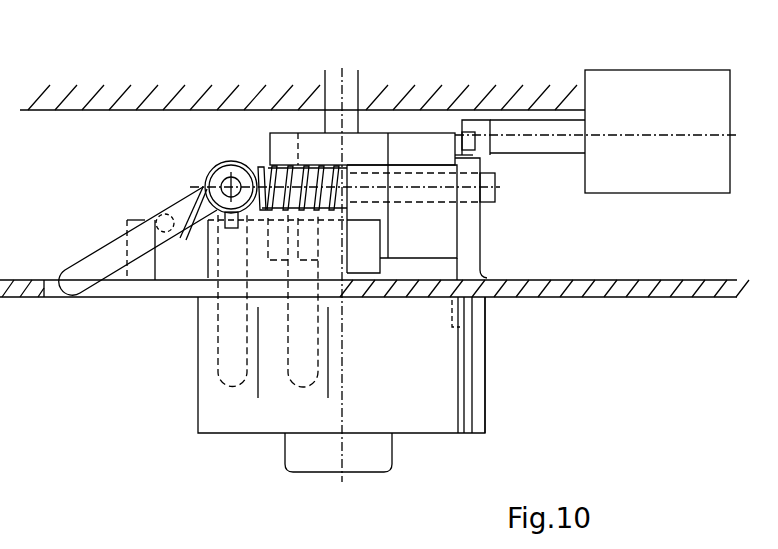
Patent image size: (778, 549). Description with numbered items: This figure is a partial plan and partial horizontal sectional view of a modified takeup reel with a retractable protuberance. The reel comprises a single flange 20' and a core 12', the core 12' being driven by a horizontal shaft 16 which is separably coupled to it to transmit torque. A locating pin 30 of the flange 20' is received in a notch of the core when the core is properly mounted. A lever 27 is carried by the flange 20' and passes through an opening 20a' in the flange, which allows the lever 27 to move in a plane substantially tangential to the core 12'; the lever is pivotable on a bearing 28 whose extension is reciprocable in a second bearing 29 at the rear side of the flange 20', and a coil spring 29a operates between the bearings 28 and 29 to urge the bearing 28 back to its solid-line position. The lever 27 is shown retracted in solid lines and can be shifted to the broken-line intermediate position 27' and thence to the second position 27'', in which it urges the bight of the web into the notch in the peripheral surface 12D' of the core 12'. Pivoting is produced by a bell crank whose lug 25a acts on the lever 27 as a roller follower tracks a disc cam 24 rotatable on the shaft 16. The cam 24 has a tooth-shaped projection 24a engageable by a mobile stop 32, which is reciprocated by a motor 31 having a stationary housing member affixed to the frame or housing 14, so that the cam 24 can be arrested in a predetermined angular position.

The frame or housing 14 is at (135, 110).
The motor 31 is at (622, 87).
The mobile stop 32 is at (517, 130).
The tooth-shaped projection 24a is at (473, 162).
The disc cam 24 is at (412, 147).
The second bearing 29 is at (470, 233).
The coil spring 29a is at (258, 167).
The bearing 28 is at (218, 175).
The lever 27 is at (138, 275).
The lug 25a is at (163, 258).
The opening 20a' is at (169, 263).
The flange 20' is at (543, 312).
The peripheral surface of the core 12D' is at (309, 365).
The intermediate position of the lever 27' is at (200, 323).
The second position of the lever 27'' is at (280, 346).
The locating pin 30 is at (462, 323).
The horizontal shaft (driving member) 16 is at (370, 457).
The core 12' is at (457, 387).